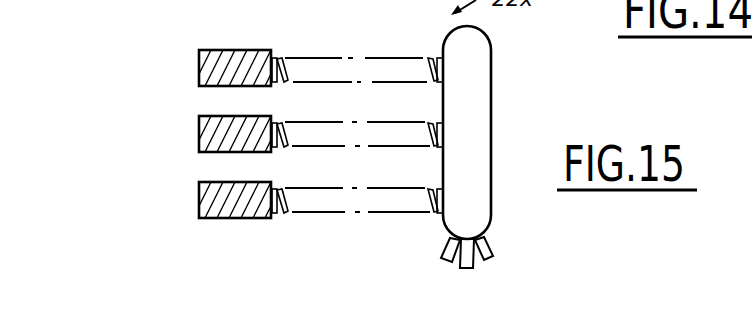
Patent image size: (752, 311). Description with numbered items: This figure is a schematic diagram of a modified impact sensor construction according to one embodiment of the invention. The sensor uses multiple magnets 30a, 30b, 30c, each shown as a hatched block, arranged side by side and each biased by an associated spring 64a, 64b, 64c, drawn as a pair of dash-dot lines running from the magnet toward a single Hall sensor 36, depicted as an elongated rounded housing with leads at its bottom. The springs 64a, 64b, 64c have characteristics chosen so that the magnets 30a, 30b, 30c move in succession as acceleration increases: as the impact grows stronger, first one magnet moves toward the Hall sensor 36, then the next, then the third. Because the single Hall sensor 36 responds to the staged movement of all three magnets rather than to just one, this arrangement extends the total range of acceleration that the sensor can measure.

The magnet 30a is at (199, 63).
The magnet 30b is at (199, 130).
The magnet 30c is at (199, 198).
The spring 64a is at (325, 52).
The spring 64b is at (322, 119).
The spring 64c is at (315, 186).
The Hall sensor 36 is at (483, 110).